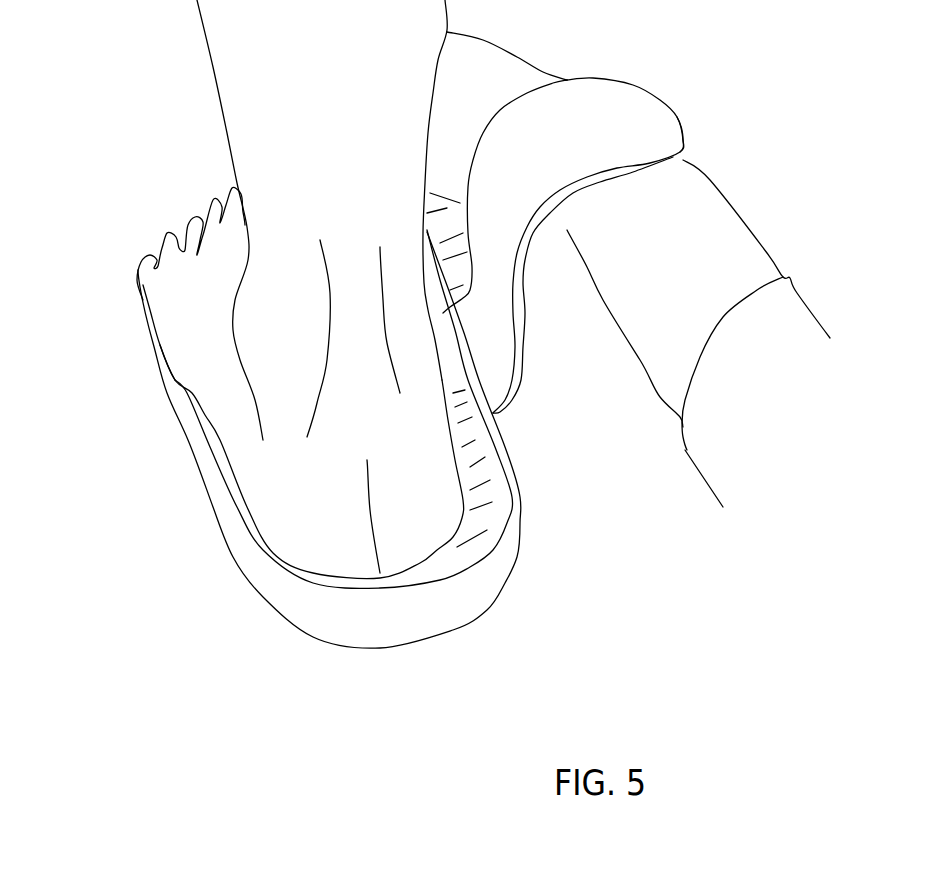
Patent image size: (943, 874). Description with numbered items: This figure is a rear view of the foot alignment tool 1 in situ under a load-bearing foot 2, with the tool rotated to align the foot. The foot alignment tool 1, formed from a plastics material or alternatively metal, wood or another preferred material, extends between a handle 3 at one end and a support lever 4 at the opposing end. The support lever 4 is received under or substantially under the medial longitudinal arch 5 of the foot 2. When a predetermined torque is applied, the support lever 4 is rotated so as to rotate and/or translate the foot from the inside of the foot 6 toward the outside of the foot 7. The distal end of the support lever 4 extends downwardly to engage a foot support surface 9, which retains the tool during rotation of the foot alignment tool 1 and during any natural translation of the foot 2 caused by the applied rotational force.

The foot alignment tool 1 is at (610, 97).
The foot 2 is at (230, 440).
The handle 3 is at (657, 140).
The support lever 4 is at (495, 413).
The medial longitudinal arch 5 is at (437, 334).
The inside of the foot 6 is at (450, 457).
The outside of the foot 7 is at (188, 358).
The foot support surface 9 is at (505, 565).